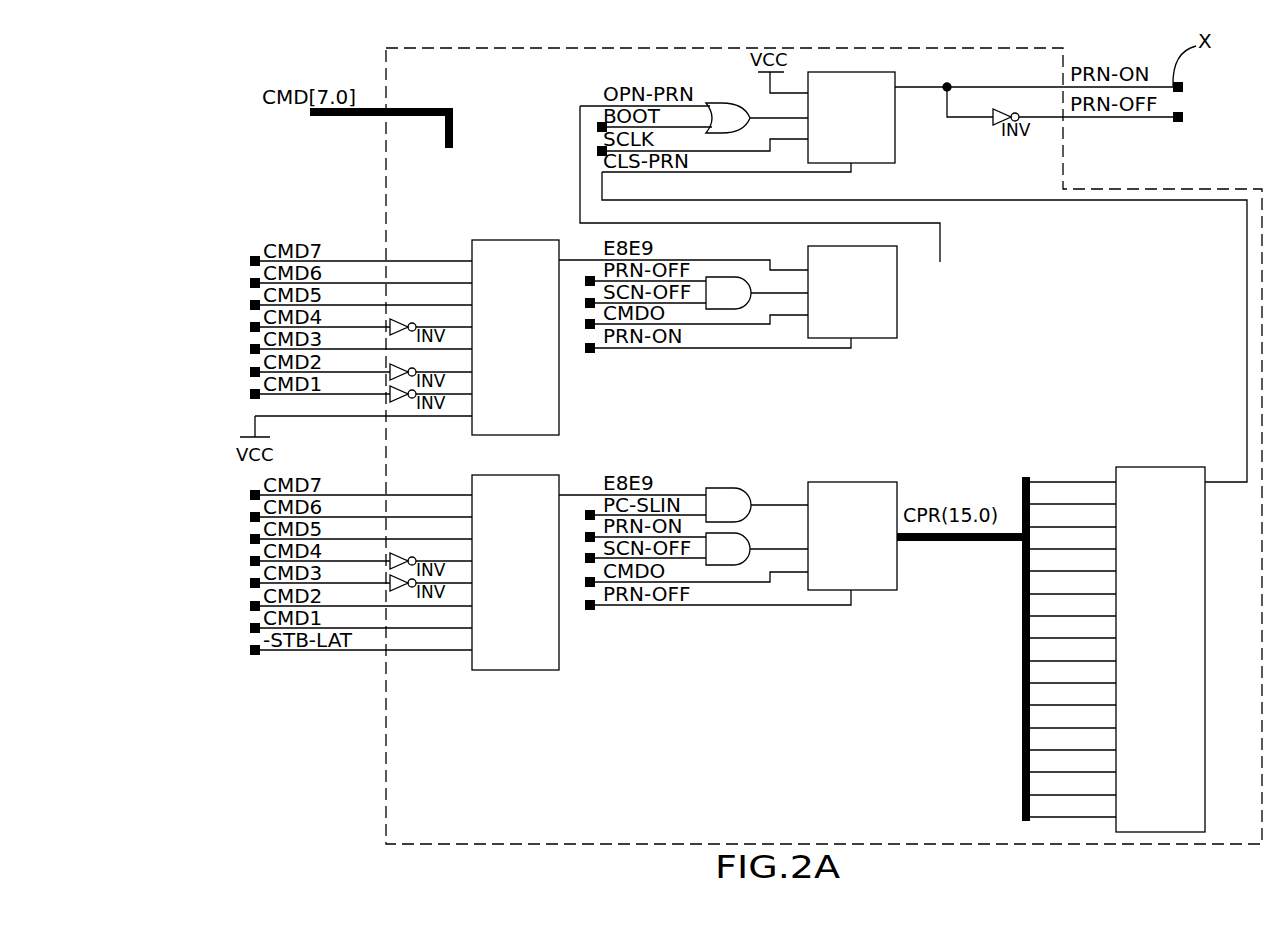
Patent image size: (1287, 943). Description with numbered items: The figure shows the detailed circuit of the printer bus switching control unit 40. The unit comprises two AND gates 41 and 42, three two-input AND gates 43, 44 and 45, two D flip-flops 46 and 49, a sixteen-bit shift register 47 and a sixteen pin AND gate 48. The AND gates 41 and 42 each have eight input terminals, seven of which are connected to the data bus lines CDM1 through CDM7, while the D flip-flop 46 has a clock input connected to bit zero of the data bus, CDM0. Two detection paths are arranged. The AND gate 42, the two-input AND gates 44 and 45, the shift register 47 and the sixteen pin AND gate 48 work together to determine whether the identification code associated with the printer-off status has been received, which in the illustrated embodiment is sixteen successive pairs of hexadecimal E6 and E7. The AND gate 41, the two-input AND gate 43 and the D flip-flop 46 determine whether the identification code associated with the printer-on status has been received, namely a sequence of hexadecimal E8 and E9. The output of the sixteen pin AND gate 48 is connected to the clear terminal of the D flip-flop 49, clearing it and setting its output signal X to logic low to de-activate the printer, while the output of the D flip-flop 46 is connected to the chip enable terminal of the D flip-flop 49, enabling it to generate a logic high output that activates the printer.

The printer bus switching control unit 40 is at (385, 802).
The AND gate 41 is at (545, 405).
The AND gate 42 is at (553, 648).
The two input AND gate 43 is at (730, 300).
The two input AND gate 44 is at (730, 503).
The two input AND gate 45 is at (733, 553).
The D flip-flop 46 is at (897, 320).
The sixteen-bit shift register 47 is at (893, 576).
The sixteen pin AND gate 48 is at (1163, 468).
The D flip-flop 49 is at (887, 147).